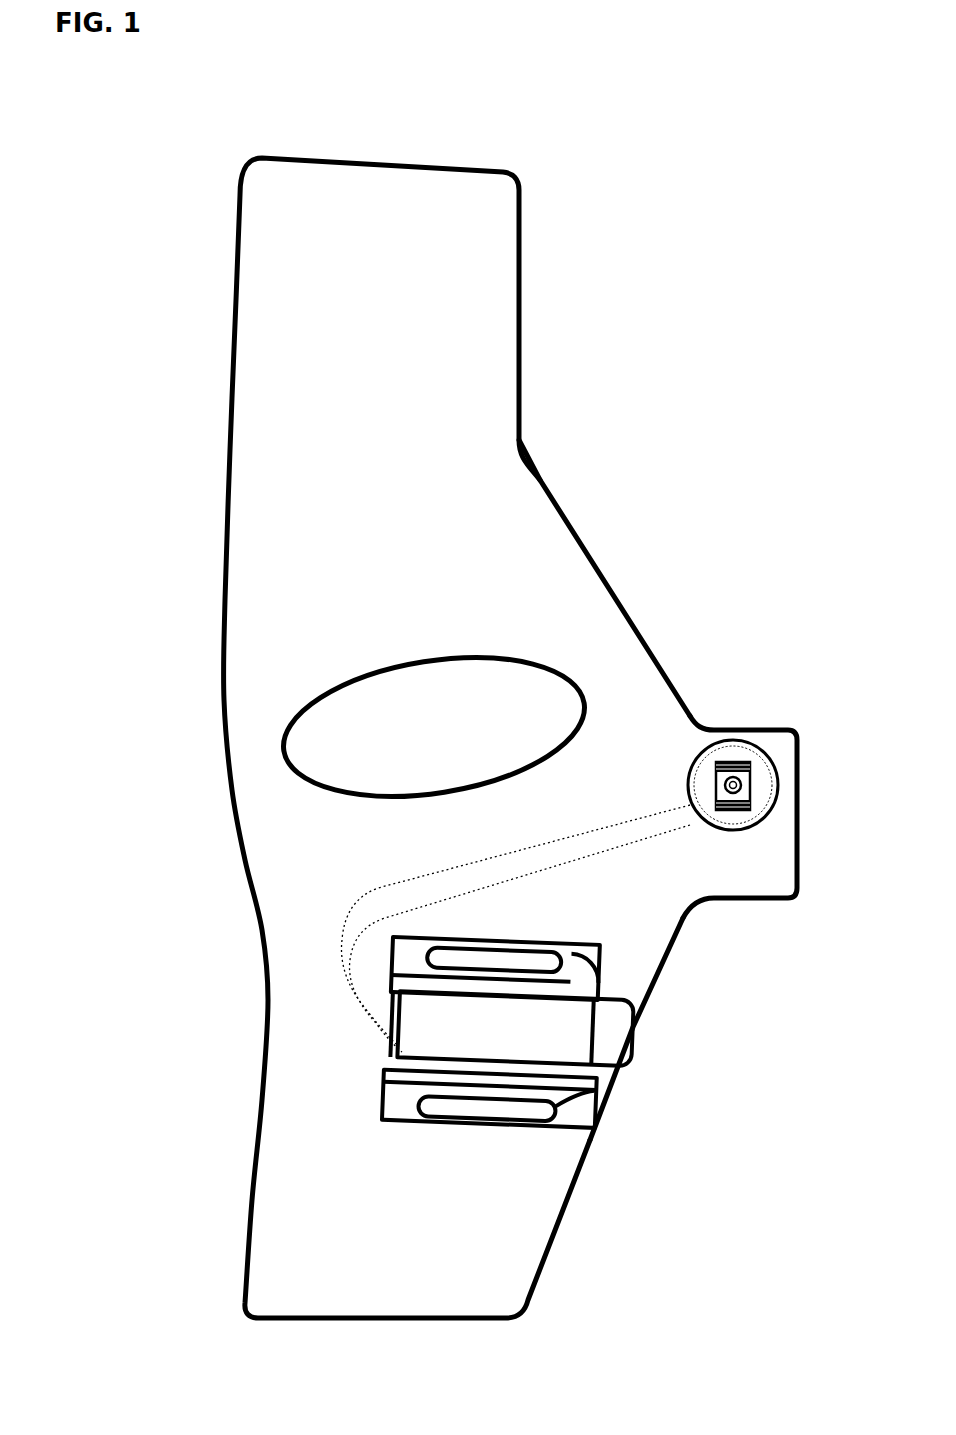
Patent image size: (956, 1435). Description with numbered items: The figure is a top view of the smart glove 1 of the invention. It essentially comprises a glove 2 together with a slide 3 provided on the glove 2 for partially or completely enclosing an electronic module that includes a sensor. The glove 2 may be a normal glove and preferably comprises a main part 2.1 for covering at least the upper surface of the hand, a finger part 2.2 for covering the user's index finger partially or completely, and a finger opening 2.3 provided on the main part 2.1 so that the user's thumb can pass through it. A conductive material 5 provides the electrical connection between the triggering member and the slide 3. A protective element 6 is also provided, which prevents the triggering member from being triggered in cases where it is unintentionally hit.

The smart glove 1 is at (218, 143).
The glove 2 is at (585, 393).
The main part 2.1 is at (615, 577).
The finger part 2.2 is at (723, 907).
The finger opening 2.3 is at (434, 727).
The slide 3 is at (434, 1170).
The conductive material 5 is at (595, 826).
The protective element 6 is at (748, 858).